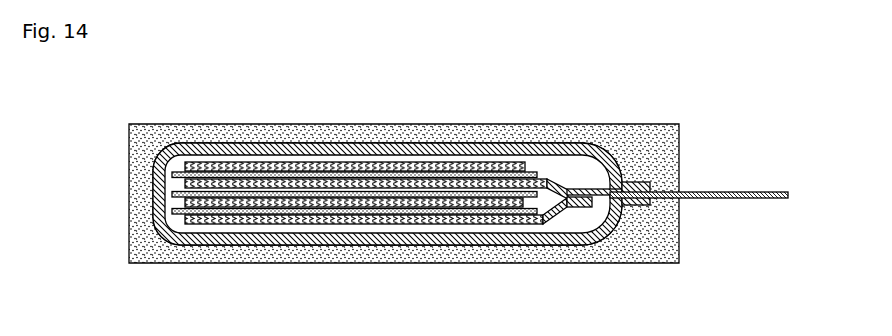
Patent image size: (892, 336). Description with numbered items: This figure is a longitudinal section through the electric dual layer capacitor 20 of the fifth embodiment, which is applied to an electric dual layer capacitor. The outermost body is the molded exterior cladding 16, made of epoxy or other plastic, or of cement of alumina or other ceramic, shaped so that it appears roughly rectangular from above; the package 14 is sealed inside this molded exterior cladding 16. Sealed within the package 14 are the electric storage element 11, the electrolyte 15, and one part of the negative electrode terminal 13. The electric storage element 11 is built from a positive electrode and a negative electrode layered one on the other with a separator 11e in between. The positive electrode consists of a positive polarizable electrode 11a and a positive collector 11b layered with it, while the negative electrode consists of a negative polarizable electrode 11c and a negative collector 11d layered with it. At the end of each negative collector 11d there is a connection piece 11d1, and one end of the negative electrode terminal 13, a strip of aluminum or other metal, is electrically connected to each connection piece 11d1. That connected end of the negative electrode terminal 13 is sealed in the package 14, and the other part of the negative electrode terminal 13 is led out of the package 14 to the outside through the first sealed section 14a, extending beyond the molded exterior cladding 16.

The electric dual layer capacitor 20 is at (185, 125).
The electric storage element 11 is at (375, 194).
The positive polarizable electrode 11a is at (246, 184).
The positive collector 11b is at (291, 186).
The negative polarizable electrode 11c is at (328, 176).
The negative collector 11d is at (369, 195).
The separator 11e is at (409, 200).
The connection piece 11d1 is at (565, 204).
The negative electrode terminal 13 is at (732, 192).
The package 14 is at (486, 152).
The first sealed section 14a is at (633, 183).
The electrolyte 15 is at (580, 170).
The molded exterior cladding 16 is at (536, 130).